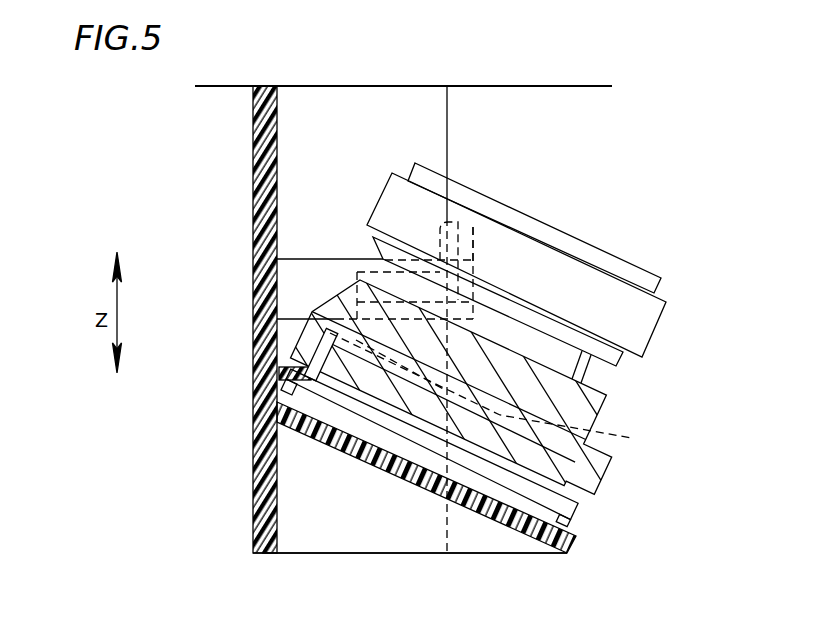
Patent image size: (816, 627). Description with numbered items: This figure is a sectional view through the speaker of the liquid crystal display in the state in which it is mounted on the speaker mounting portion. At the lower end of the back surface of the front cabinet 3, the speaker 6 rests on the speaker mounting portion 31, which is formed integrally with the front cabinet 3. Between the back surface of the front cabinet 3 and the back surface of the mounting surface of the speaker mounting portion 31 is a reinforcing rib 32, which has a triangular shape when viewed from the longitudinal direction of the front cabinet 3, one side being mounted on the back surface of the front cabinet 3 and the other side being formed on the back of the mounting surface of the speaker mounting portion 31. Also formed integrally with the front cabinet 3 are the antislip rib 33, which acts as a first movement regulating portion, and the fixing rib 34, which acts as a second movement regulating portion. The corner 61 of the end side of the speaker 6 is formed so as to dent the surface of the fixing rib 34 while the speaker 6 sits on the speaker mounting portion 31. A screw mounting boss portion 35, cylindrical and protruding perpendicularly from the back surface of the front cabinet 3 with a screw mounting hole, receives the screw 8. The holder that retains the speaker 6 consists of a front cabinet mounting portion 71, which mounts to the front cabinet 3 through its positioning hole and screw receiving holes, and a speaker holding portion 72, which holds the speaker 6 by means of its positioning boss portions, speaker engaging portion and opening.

The front cabinet 3 is at (253, 262).
The speaker 6 is at (655, 338).
The screw 8 is at (473, 260).
The speaker mounting portion 31 is at (575, 528).
The reinforcing rib 32 is at (396, 515).
The antislip rib 33 is at (285, 366).
The fixing rib 34 is at (260, 402).
The screw mounting boss portion 35 is at (448, 218).
The corner 61 is at (282, 360).
The front cabinet mounting portion 71 is at (458, 244).
The speaker holding portion 72 is at (632, 438).